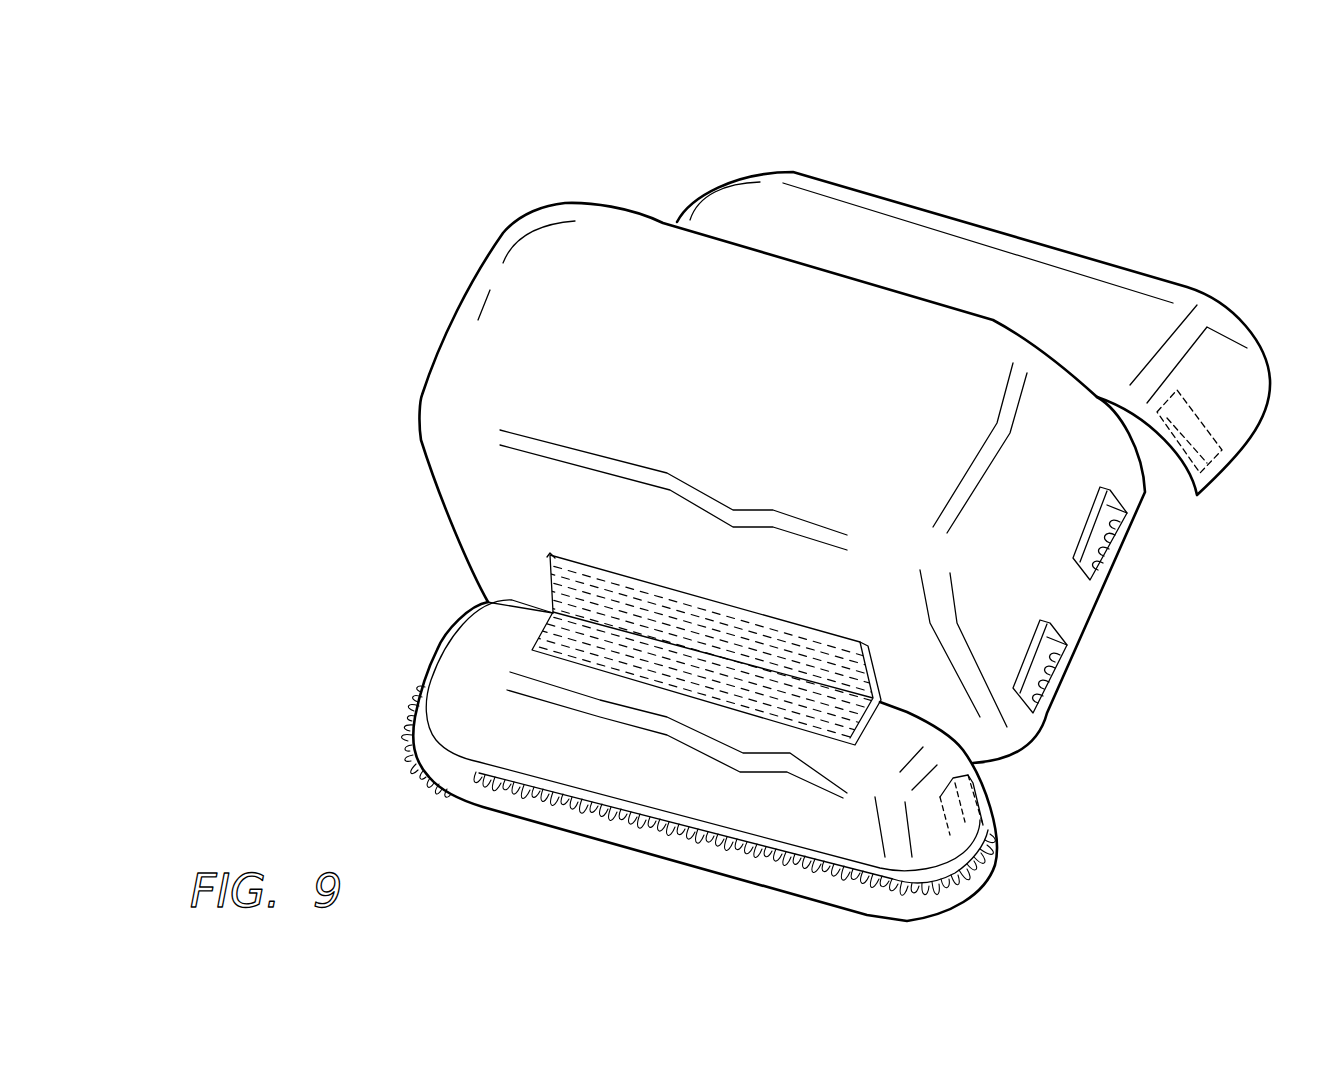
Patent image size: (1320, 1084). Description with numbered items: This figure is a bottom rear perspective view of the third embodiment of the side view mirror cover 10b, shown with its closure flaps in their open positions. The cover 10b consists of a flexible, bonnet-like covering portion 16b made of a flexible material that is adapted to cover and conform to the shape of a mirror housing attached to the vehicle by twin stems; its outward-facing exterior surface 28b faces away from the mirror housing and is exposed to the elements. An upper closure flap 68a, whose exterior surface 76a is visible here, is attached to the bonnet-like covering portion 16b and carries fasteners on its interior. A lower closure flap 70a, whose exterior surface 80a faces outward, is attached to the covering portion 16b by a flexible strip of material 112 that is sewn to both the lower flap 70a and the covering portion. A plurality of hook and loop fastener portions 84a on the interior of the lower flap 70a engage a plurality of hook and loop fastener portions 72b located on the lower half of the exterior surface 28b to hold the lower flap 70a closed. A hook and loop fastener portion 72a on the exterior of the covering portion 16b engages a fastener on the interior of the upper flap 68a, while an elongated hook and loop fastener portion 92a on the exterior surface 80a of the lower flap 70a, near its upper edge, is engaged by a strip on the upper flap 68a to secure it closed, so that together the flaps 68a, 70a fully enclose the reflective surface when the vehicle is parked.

The side view mirror cover 10b is at (583, 181).
The bonnet-like covering portion 16b is at (450, 418).
The exterior surface 28b is at (795, 366).
The upper closure flap 68a is at (1088, 226).
The exterior surface 76a is at (953, 266).
The hook and loop fastener portion 72a is at (1122, 533).
The hook and loop fastener portions 72b is at (1048, 663).
The flexible strip of material 112 is at (748, 628).
The lower closure flap 70a is at (744, 904).
The exterior surface 80a is at (640, 775).
The hook and loop fastener portions 84a is at (972, 812).
The hook and loop fastener portion 92a is at (680, 830).